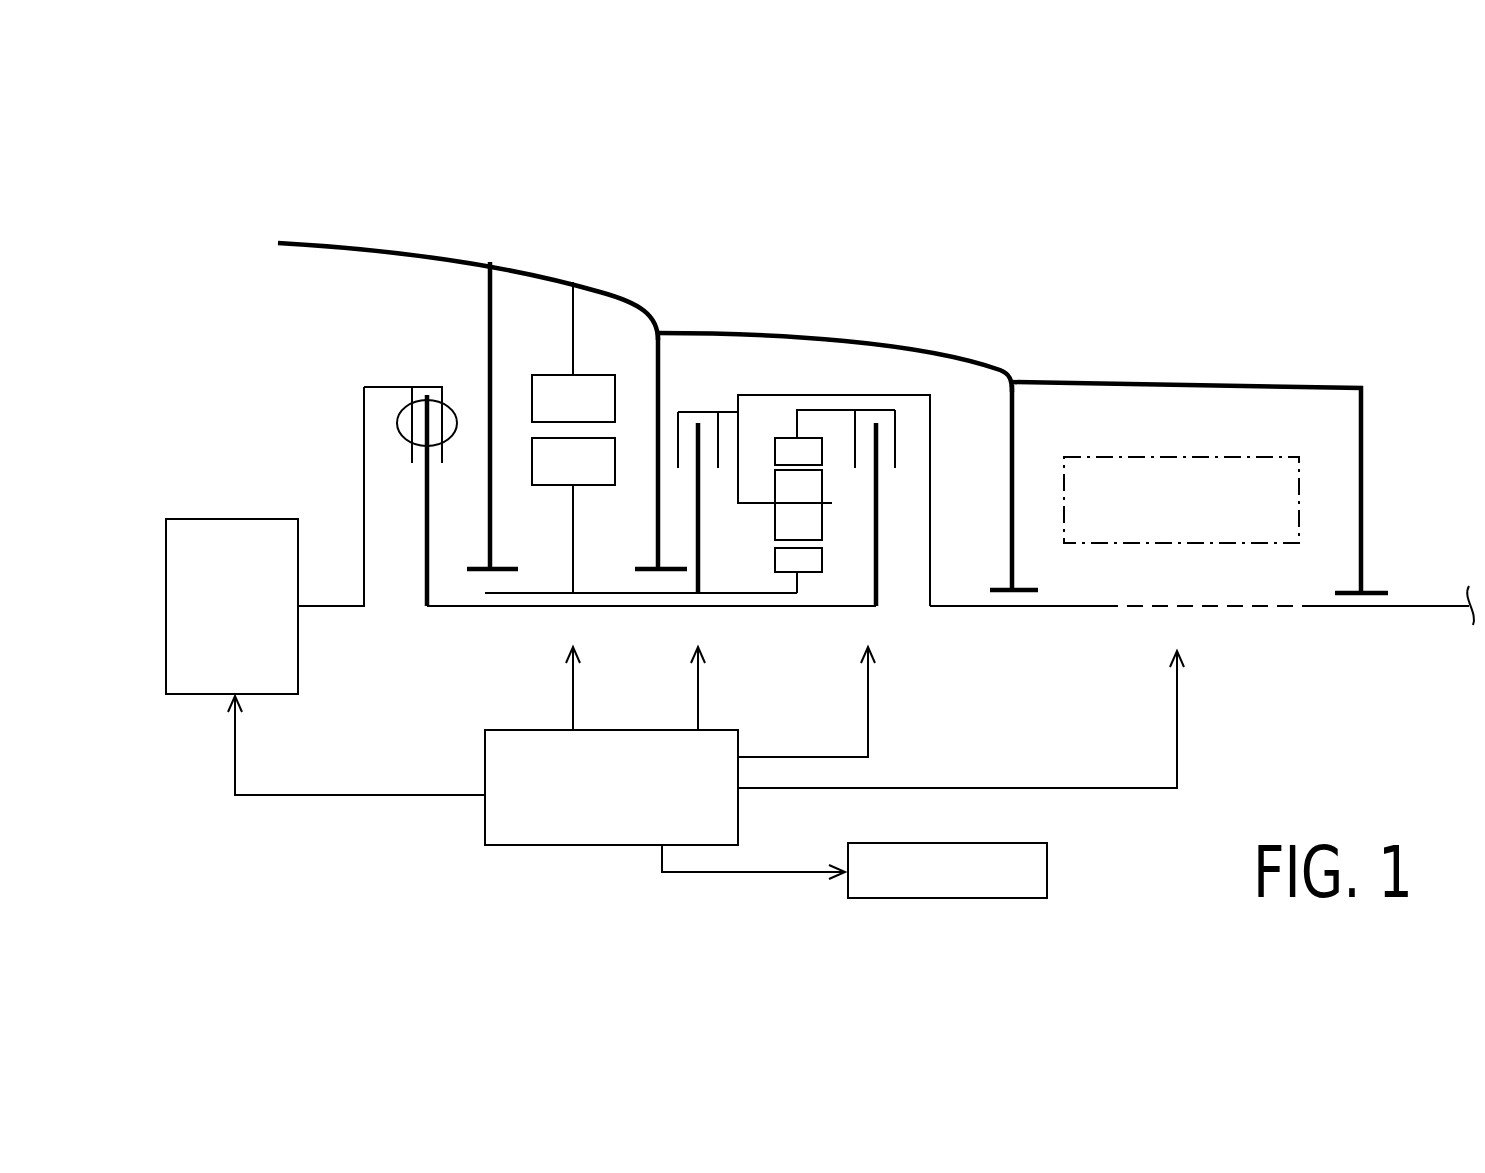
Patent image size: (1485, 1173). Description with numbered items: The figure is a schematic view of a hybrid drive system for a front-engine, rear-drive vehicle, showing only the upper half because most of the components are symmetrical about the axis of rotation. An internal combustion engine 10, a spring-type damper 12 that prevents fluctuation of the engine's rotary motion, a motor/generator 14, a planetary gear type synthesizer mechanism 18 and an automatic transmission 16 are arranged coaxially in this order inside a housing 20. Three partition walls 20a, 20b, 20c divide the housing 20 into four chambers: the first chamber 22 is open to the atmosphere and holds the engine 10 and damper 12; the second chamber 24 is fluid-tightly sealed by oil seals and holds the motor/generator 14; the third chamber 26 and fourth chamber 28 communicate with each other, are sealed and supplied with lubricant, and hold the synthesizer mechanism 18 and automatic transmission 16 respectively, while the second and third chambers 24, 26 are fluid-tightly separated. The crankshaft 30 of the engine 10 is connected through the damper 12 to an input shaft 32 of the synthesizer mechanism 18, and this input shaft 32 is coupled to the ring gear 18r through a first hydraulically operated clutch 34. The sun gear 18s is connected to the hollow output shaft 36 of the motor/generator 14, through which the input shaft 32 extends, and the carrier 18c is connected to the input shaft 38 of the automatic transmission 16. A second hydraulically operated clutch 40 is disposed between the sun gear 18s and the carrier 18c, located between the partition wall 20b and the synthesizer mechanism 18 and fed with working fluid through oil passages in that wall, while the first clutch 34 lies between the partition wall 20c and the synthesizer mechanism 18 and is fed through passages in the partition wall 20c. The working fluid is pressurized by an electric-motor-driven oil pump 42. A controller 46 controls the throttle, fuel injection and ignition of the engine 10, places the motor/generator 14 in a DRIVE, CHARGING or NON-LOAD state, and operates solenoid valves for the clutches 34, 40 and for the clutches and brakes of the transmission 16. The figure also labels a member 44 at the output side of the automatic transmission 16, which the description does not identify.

The internal combustion engine 10 is at (221, 538).
The damper 12 is at (456, 418).
The motor/generator 14 is at (543, 342).
The automatic transmission 16 is at (1208, 457).
The synthesizer mechanism 18 is at (826, 374).
The ring gear 18r is at (788, 445).
The carrier 18c is at (758, 505).
The sun gear 18s is at (812, 560).
The housing 20 is at (1144, 384).
The partition wall 20a is at (487, 302).
The partition wall 20b is at (655, 365).
The partition wall 20c is at (1022, 412).
The first chamber 22 is at (287, 343).
The second chamber 24 is at (602, 536).
The third chamber 26 is at (958, 429).
The fourth chamber 28 is at (1306, 437).
The crankshaft 30 is at (345, 611).
The input shaft 32 is at (481, 606).
The first hydraulically operated clutch 34 is at (887, 410).
The output shaft 36 is at (653, 593).
The input shaft 38 is at (952, 606).
The second hydraulically operated clutch 40 is at (700, 410).
The oil pump 42 is at (1042, 873).
The transmission input shaft 44 is at (1447, 611).
The controller 46 is at (500, 823).